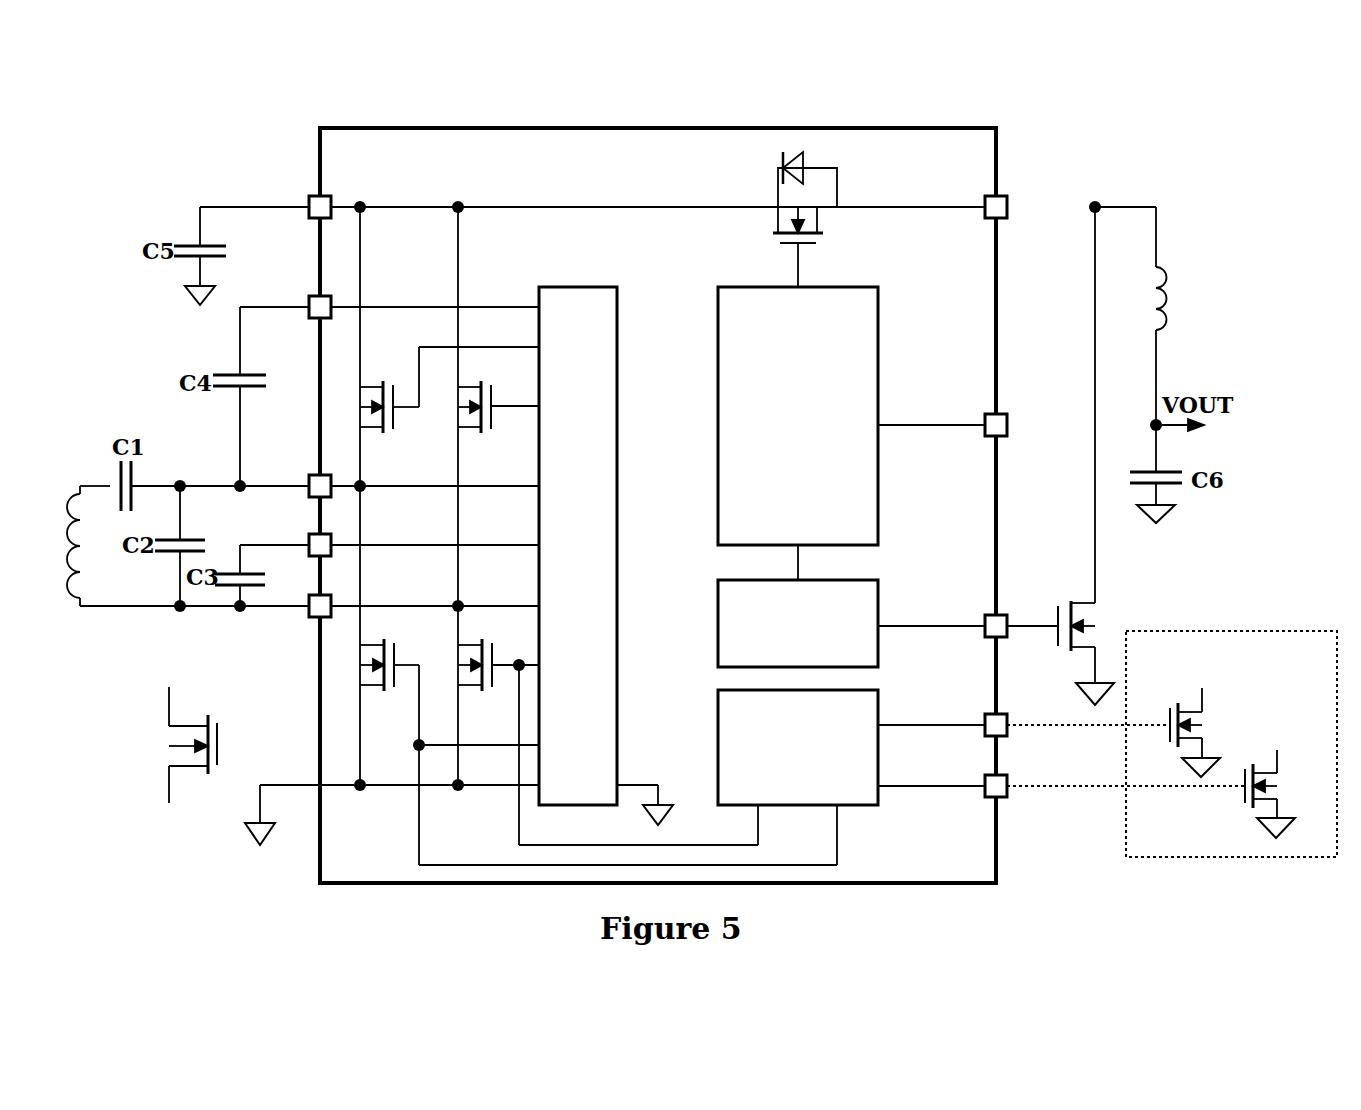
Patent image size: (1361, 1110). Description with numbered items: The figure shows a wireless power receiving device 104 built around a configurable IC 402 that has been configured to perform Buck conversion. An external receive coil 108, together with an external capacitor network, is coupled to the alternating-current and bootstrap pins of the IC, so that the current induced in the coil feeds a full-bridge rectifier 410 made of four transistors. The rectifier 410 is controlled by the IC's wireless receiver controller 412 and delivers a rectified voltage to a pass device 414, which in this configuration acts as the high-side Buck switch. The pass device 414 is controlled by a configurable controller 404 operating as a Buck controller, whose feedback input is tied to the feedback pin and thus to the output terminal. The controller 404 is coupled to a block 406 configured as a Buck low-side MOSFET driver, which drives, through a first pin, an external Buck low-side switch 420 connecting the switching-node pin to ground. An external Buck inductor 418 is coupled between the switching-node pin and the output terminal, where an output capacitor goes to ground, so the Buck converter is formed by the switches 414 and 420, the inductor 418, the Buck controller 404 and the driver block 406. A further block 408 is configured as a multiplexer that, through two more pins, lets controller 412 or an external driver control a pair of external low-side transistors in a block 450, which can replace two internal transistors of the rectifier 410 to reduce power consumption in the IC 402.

The receiving device 104 is at (533, 100).
The IC 402 is at (440, 167).
The configurable controller 404 is at (881, 362).
The block 406 is at (883, 611).
The block 408 is at (870, 721).
The full-bridge rectifier 410 is at (418, 526).
The wireless receiver controller 412 is at (598, 625).
The pass device 414 is at (772, 197).
The external Buck inductor 418 is at (1163, 272).
The external Buck low-side switch 420 is at (1106, 637).
The block 450 is at (1330, 669).
The receive coil 108 is at (80, 490).